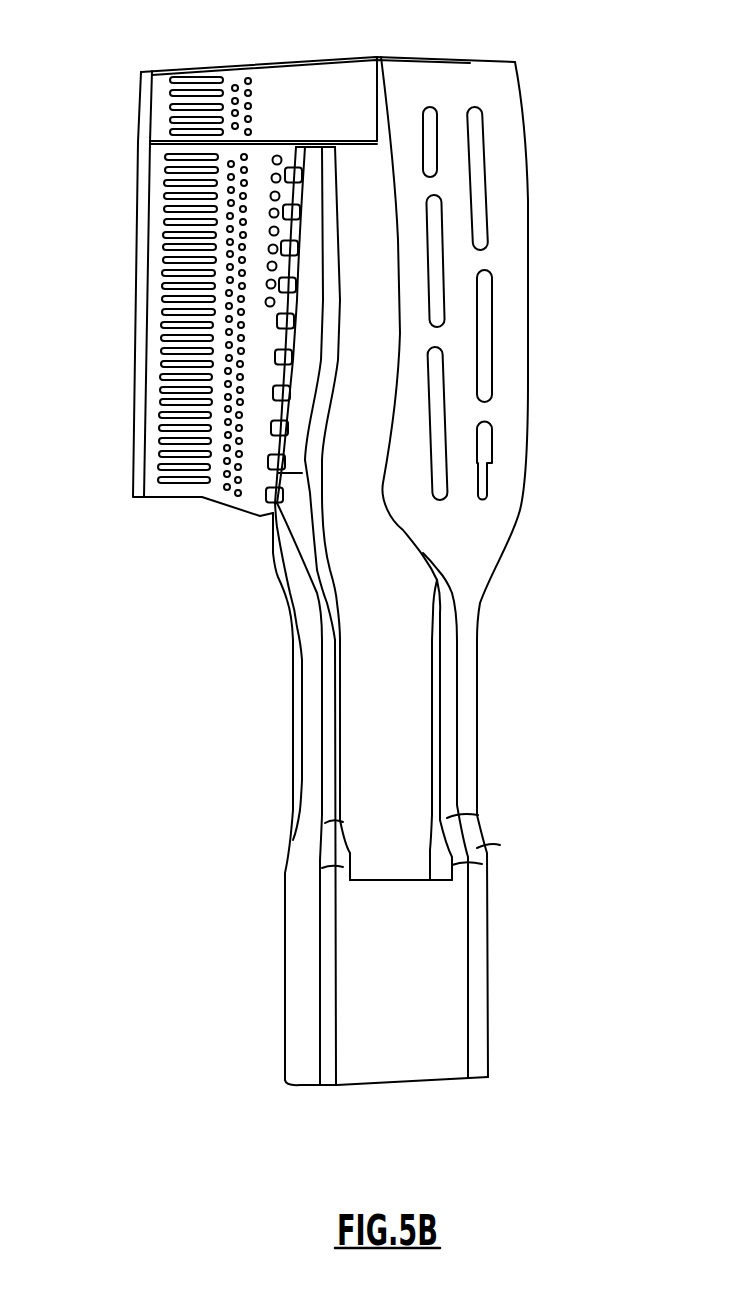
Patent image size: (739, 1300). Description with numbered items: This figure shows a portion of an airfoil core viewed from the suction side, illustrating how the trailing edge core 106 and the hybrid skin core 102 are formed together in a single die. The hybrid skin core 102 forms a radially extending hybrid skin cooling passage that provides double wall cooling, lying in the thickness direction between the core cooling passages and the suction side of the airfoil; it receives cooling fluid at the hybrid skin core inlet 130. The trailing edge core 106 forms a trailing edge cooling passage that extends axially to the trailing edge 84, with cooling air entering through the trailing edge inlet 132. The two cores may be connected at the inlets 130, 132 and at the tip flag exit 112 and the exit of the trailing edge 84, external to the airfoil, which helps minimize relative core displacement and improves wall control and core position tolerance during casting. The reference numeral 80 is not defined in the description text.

The cooling assembly 80 is at (472, 62).
The trailing edge 84 is at (171, 329).
The hybrid skin core 102 is at (515, 272).
The trailing edge core 106 is at (155, 440).
The tip flag exit 112 is at (153, 93).
The hybrid skin core inlet 130 is at (500, 838).
The trailing edge inlet 132 is at (300, 850).